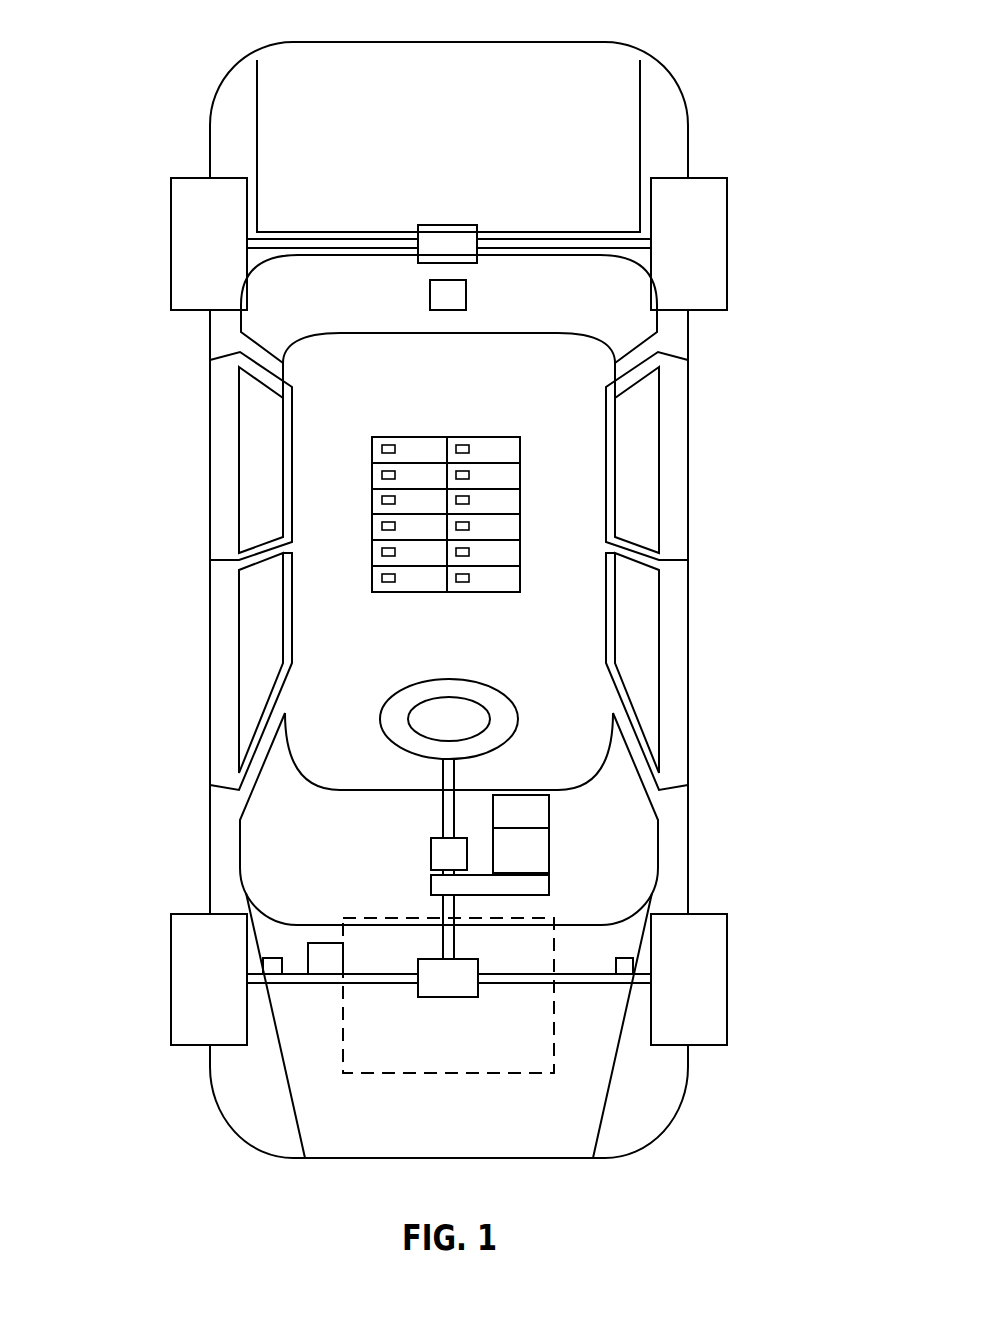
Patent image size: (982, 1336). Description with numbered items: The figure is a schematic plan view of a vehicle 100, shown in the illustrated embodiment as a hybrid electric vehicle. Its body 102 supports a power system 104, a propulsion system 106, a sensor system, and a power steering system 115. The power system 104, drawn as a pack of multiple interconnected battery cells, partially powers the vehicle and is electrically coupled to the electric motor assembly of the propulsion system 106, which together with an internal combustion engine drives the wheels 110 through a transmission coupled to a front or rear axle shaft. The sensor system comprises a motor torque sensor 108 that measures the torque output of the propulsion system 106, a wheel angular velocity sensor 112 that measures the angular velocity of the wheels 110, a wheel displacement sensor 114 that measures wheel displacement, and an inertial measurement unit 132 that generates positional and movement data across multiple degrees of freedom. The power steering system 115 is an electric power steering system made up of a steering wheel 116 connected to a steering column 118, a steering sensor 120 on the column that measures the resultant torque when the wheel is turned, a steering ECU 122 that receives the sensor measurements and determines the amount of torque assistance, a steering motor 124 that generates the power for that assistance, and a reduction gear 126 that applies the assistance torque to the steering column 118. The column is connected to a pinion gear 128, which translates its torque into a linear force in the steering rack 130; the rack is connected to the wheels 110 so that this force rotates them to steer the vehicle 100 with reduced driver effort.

The vehicle 100 is at (521, 580).
The body 102 is at (670, 73).
The power system 104 is at (387, 437).
The propulsion system 106 is at (448, 1025).
The motor torque sensor 108 is at (327, 943).
The wheels 110 is at (171, 245).
The wheel angular velocity sensor 112 is at (270, 958).
The wheel displacement sensor 114 is at (624, 958).
The power steering system 115 is at (567, 851).
The steering wheel 116 is at (448, 678).
The steering column 118 is at (443, 777).
The steering sensor 120 is at (431, 845).
The steering ECU 122 is at (550, 808).
The steering motor 124 is at (550, 852).
The reduction gear 126 is at (550, 882).
The pinion gear 128 is at (448, 1000).
The steering rack 130 is at (600, 986).
The inertial measurement unit 132 is at (466, 293).